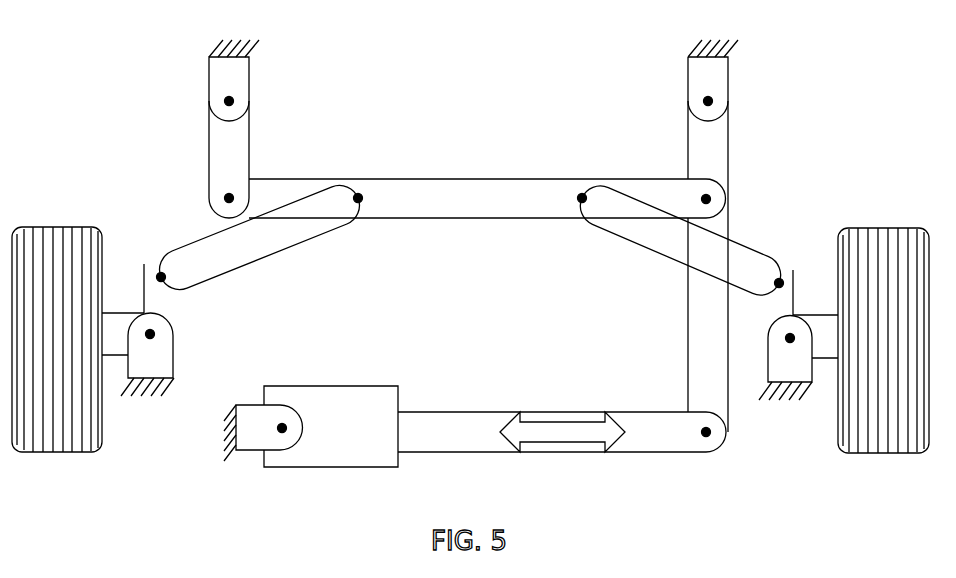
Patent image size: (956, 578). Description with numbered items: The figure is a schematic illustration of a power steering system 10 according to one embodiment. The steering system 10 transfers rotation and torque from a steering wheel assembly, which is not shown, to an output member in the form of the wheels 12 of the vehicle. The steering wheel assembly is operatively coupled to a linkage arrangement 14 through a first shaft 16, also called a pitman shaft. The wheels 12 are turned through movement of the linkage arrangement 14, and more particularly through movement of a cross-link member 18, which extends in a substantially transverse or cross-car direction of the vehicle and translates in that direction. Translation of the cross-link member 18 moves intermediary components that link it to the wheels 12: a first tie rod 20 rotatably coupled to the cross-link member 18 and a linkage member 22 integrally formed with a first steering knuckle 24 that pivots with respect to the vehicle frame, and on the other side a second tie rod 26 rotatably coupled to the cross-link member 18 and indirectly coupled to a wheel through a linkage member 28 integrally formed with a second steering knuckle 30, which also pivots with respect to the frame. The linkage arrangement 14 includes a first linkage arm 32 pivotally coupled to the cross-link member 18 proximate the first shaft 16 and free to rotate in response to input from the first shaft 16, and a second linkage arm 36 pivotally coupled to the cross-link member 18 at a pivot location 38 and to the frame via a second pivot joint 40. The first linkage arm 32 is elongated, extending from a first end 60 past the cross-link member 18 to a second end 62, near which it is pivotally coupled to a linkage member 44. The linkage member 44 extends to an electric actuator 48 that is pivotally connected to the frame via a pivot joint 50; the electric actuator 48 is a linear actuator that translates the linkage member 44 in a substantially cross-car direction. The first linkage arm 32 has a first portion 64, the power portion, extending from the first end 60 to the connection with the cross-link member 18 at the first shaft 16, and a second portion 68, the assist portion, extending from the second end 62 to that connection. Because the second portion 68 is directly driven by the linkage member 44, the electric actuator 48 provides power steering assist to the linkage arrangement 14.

The steering system 10 is at (67, 54).
The wheels 12 is at (40, 228).
The linkage arrangement 14 is at (372, 92).
The first shaft 16 is at (713, 101).
The cross-link member 18 is at (495, 190).
The first tie rod 20 is at (643, 240).
The linkage member 22 is at (770, 311).
The first steering knuckle 24 is at (820, 358).
The second tie rod 26 is at (278, 238).
The linkage member 28 is at (168, 309).
The second steering knuckle 30 is at (120, 323).
The first linkage arm 32 is at (719, 141).
The second linkage arm 36 is at (206, 151).
The pivot location 38 is at (225, 197).
The second pivot joint 40 is at (248, 75).
The linkage member 44 is at (475, 418).
The electric actuator 48 is at (335, 466).
The pivot joint 50 is at (250, 443).
The first end 60 is at (687, 97).
The second end 62 is at (722, 442).
The first portion 64 is at (700, 151).
The second portion 68 is at (690, 350).